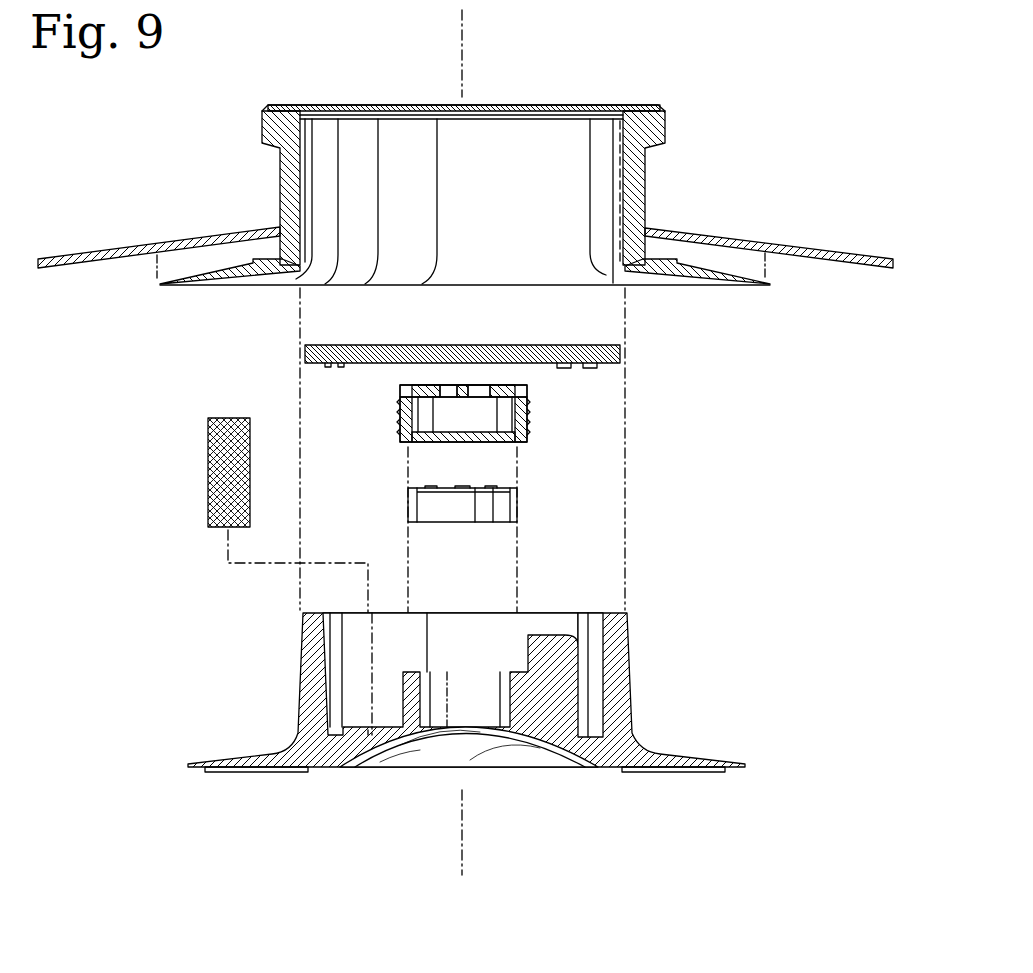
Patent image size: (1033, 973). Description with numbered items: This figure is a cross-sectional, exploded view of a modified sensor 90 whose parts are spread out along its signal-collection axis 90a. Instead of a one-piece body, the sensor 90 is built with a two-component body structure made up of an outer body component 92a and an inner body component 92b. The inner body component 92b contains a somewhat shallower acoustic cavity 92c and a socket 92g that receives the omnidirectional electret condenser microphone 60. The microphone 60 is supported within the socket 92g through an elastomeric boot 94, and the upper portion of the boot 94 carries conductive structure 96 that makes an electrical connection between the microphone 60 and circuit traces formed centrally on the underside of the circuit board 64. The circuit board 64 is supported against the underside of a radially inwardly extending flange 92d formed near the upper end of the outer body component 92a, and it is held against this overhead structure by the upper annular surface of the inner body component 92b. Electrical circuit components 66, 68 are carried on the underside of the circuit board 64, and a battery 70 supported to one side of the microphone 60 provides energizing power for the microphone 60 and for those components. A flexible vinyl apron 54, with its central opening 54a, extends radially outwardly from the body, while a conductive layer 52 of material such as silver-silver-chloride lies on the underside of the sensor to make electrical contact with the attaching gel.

The sensor 90 is at (116, 359).
The signal-collection axis 90a is at (466, 55).
The outer body component 92a is at (646, 190).
The inner body component 92b is at (622, 690).
The acoustic cavity 92c is at (528, 737).
The radially inwardly extending flange 92d is at (612, 122).
The socket 92g is at (465, 650).
The flexible vinyl apron 54 is at (836, 249).
The central opening 54a is at (262, 226).
The circuit board 64 is at (470, 345).
The electrical circuit component 66 is at (327, 367).
The electrical circuit component 68 is at (591, 368).
The elastomeric boot 94 is at (527, 410).
The conductive structure 96 is at (432, 385).
The battery 70 is at (208, 498).
The electret condenser microphone 60 is at (483, 524).
The conductive layer 52 is at (265, 769).